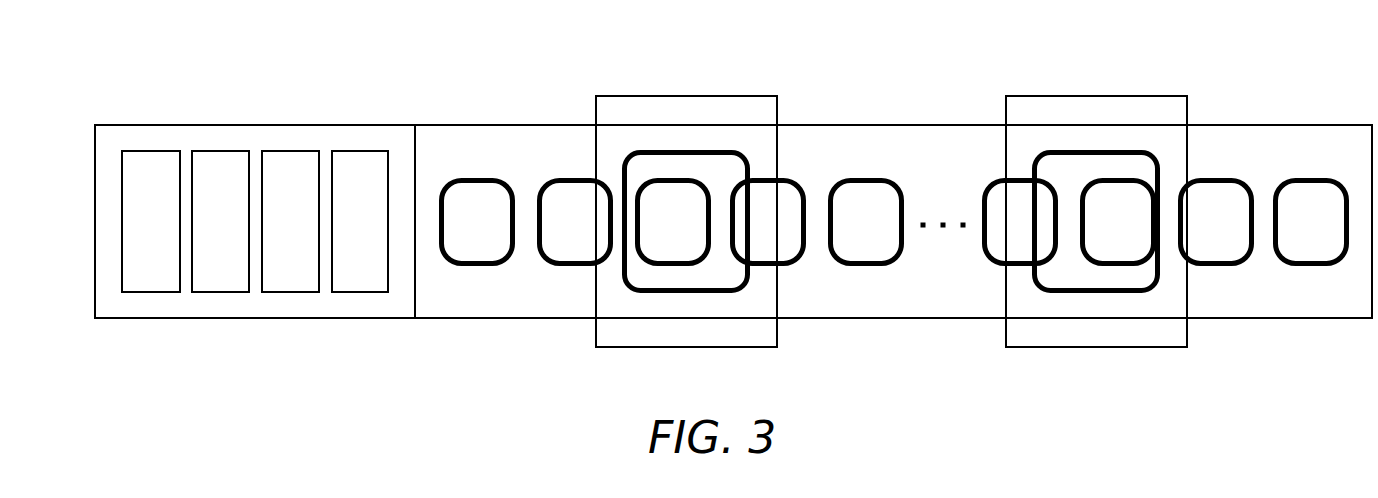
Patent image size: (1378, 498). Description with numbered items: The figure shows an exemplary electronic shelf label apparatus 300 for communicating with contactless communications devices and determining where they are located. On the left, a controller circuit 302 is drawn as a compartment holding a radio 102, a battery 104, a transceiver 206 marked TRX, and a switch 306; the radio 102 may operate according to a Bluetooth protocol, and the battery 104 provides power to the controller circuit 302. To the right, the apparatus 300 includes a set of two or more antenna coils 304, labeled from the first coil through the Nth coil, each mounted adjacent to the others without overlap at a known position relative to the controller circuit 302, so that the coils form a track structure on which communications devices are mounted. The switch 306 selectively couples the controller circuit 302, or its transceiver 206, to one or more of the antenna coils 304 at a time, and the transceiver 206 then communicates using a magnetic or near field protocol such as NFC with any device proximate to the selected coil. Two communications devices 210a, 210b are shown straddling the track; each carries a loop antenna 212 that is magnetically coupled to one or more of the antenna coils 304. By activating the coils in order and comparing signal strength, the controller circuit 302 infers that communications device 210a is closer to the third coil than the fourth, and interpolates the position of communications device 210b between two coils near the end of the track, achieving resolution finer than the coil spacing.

The apparatus 300 is at (305, 96).
The controller circuit 302 is at (208, 124).
The set of two or more antenna coils 304 is at (499, 123).
The radio 102 is at (152, 292).
The battery 104 is at (222, 292).
The transceiver (TRX) 206 is at (296, 292).
The switch 306 is at (366, 292).
The communications device 210a is at (675, 94).
The communications device 210b is at (1085, 94).
The loop antenna 212 is at (707, 150).